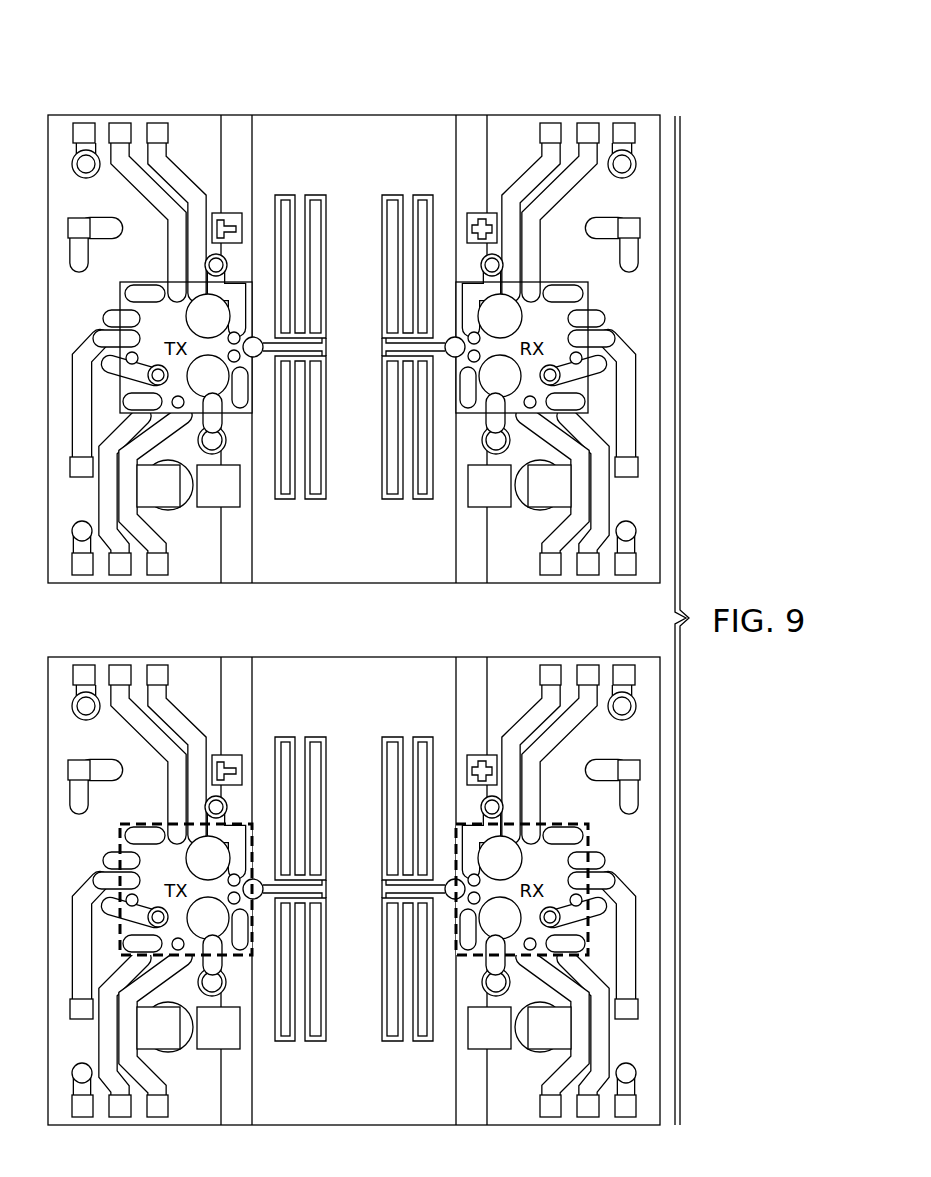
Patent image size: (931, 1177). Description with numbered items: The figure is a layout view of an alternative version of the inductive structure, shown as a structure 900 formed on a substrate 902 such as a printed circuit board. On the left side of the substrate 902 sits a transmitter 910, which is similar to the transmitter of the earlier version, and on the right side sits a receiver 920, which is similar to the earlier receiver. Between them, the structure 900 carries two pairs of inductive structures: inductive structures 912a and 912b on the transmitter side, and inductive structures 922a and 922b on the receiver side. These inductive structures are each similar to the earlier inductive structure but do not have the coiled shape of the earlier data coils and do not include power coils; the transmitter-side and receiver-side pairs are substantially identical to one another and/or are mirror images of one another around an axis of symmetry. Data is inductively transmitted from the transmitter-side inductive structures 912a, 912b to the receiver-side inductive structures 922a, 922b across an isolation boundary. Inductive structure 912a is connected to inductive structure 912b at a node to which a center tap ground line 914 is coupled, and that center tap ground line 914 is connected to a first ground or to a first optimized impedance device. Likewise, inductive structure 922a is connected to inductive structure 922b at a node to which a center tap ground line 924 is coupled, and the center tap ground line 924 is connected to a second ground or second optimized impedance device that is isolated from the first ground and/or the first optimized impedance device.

The structure 900 is at (368, 567).
The substrate 902 is at (292, 114).
The transmitter (TX) 910 is at (145, 823).
The receiver (RX) 920 is at (563, 823).
The inductive structure 912a is at (300, 186).
The inductive structure 912b is at (299, 510).
The inductive structure 922a is at (409, 186).
The inductive structure 922b is at (408, 510).
The center tap ground line 914 is at (315, 328).
The center tap ground line 924 is at (392, 366).